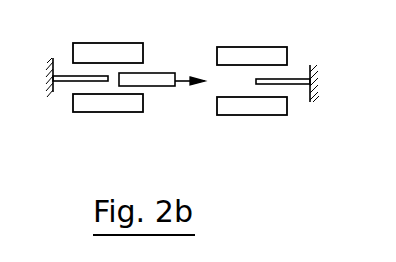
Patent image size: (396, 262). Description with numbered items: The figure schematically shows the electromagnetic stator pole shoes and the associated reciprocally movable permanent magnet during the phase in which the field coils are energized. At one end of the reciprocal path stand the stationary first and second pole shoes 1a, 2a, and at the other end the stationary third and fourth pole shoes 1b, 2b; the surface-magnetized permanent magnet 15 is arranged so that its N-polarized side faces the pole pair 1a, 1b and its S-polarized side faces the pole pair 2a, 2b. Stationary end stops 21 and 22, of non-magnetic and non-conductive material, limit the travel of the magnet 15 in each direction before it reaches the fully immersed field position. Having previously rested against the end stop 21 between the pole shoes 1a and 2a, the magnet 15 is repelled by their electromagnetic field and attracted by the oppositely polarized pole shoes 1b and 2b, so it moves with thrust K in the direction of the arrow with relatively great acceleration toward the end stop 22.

The first stator pole shoe 1a is at (122, 52).
The second stator pole shoe 2a is at (122, 106).
The end stop 21 is at (62, 78).
The surface-magnetized permanent magnet 15 is at (166, 83).
The third stator pole shoe 1b is at (224, 57).
The fourth stator pole shoe 2b is at (261, 108).
The end stop 22 is at (297, 83).